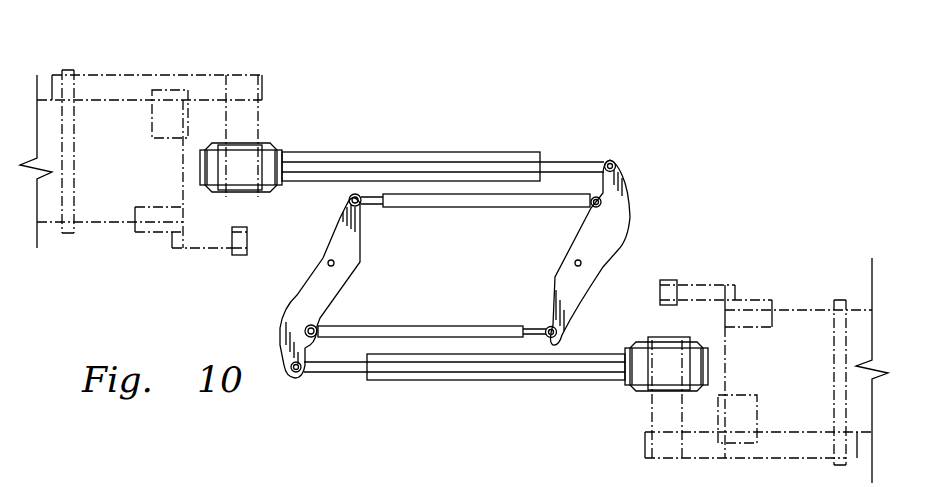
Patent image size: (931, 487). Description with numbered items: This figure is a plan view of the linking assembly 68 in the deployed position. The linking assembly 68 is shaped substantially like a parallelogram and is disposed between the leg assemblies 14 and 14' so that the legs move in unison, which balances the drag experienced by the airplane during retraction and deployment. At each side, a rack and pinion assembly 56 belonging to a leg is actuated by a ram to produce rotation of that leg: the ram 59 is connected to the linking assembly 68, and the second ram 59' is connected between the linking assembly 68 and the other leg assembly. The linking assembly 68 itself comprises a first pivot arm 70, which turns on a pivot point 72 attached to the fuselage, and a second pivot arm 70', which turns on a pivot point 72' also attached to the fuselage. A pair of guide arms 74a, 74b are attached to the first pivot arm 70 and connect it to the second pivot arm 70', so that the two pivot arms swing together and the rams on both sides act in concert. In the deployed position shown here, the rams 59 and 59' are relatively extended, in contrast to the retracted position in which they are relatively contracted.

The leg assembly 14 is at (141, 132).
The leg assembly 14' is at (766, 364).
The rack and pinion assembly 56 is at (270, 143).
The ram 59 is at (443, 133).
The second ram 59' is at (464, 400).
The linking assembly 68 is at (567, 109).
The first pivot arm 70 is at (315, 288).
The second pivot arm 70' is at (595, 252).
The pivot point 72 is at (368, 257).
The pivot point 72' is at (541, 275).
The guide arm 74a is at (455, 207).
The guide arm 74b is at (420, 326).